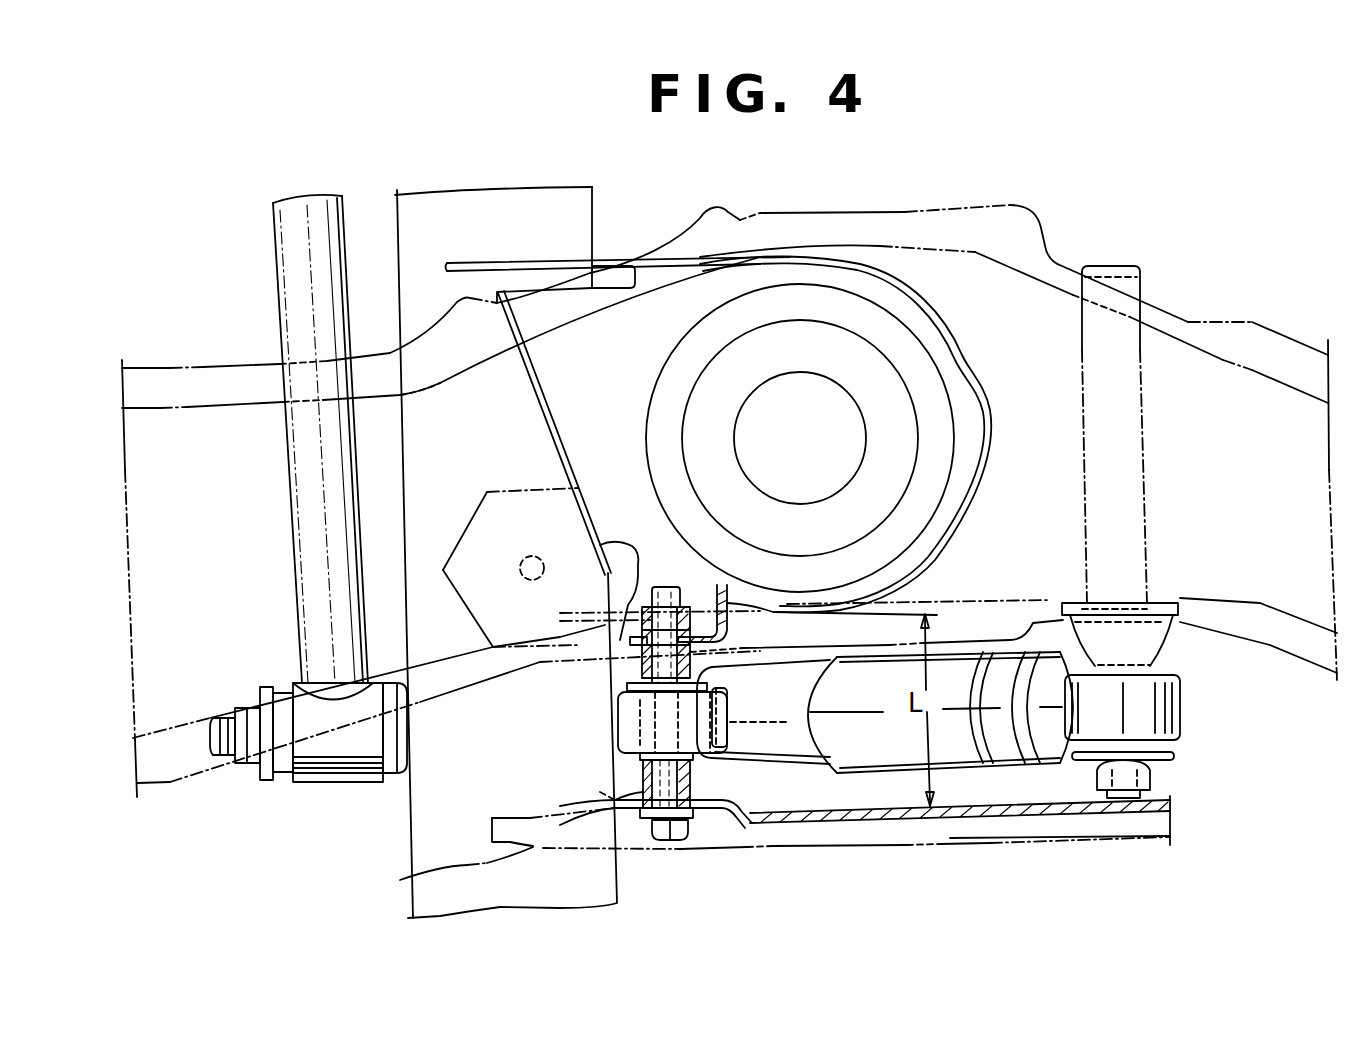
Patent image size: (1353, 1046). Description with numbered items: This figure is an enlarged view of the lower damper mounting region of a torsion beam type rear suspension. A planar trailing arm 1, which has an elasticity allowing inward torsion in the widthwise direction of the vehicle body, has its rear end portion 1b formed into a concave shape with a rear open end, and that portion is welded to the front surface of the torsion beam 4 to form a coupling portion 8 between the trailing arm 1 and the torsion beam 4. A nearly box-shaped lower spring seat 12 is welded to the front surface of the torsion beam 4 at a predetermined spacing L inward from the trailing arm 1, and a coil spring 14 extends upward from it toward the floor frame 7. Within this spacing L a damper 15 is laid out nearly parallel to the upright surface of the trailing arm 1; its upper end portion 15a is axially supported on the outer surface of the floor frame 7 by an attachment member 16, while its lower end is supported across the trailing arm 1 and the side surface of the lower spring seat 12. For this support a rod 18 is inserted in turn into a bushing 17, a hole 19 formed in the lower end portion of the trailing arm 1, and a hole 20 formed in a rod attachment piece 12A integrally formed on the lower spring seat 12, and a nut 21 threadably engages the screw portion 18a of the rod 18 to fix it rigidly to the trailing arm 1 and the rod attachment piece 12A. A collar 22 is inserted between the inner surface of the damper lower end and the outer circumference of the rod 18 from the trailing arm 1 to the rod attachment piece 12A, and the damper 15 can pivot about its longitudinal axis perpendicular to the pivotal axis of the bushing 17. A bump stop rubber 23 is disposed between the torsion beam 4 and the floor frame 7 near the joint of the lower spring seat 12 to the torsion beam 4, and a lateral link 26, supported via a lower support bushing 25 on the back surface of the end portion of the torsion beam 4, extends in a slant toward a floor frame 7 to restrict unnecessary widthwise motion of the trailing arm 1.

The trailing arm 1 is at (958, 823).
The rear end portion 1b is at (412, 876).
The torsion beam 4 is at (568, 220).
The floor frame 7 is at (1283, 333).
The coupling portion 8 is at (560, 812).
The lower spring seat 12 is at (948, 316).
The rod attachment piece 12A is at (727, 631).
The coil spring 14 is at (950, 424).
The damper 15 is at (868, 745).
The upper end portion 15a is at (1180, 713).
The attachment member 16 is at (1150, 490).
The bushing 17 is at (617, 722).
The rod 18 is at (700, 777).
The screw portion 18a is at (670, 585).
The hole 19 is at (640, 783).
The hole 20 is at (640, 668).
The nut 21 is at (700, 590).
The collar 22 is at (630, 690).
The bump stop rubber 23 is at (492, 482).
The lower support bushing 25 is at (318, 773).
The lateral link 26 is at (297, 265).